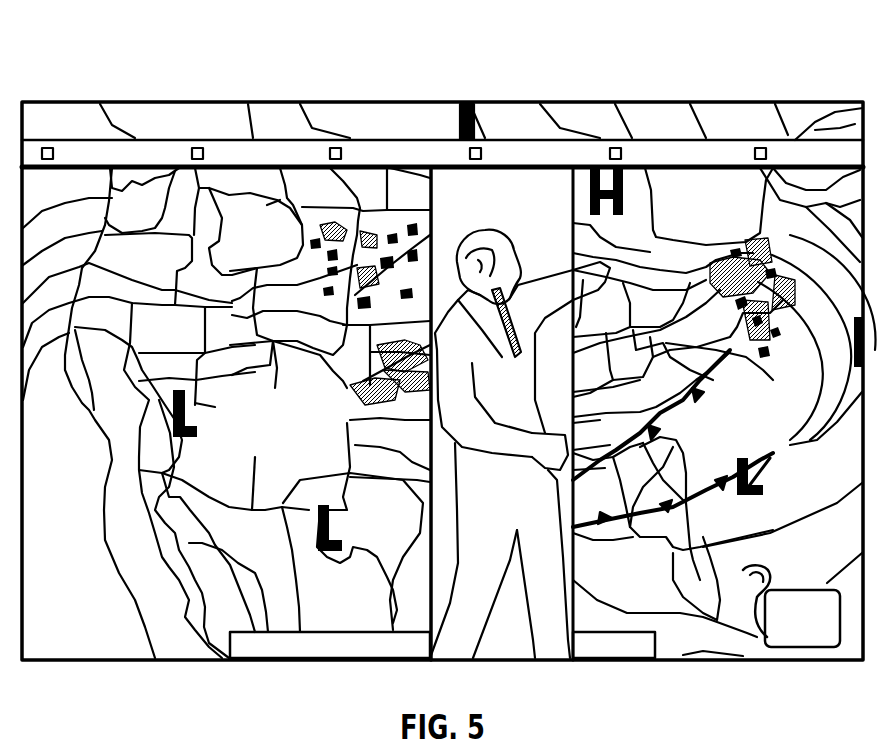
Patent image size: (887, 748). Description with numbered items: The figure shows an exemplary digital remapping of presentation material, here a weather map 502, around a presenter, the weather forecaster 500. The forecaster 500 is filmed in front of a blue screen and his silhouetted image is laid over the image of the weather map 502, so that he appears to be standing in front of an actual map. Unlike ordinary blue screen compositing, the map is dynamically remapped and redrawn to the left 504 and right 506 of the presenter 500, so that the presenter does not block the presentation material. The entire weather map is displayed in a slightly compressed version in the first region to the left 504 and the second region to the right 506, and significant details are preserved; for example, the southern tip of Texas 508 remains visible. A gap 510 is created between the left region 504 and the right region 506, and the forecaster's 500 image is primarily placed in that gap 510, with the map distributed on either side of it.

The weather forecaster 500 is at (549, 645).
The weather map 502 is at (268, 80).
The left region of the presentation material 504 is at (219, 430).
The right region of the presentation material 506 is at (687, 432).
The southern tip of Texas 508 is at (410, 608).
The gap 510 is at (458, 190).